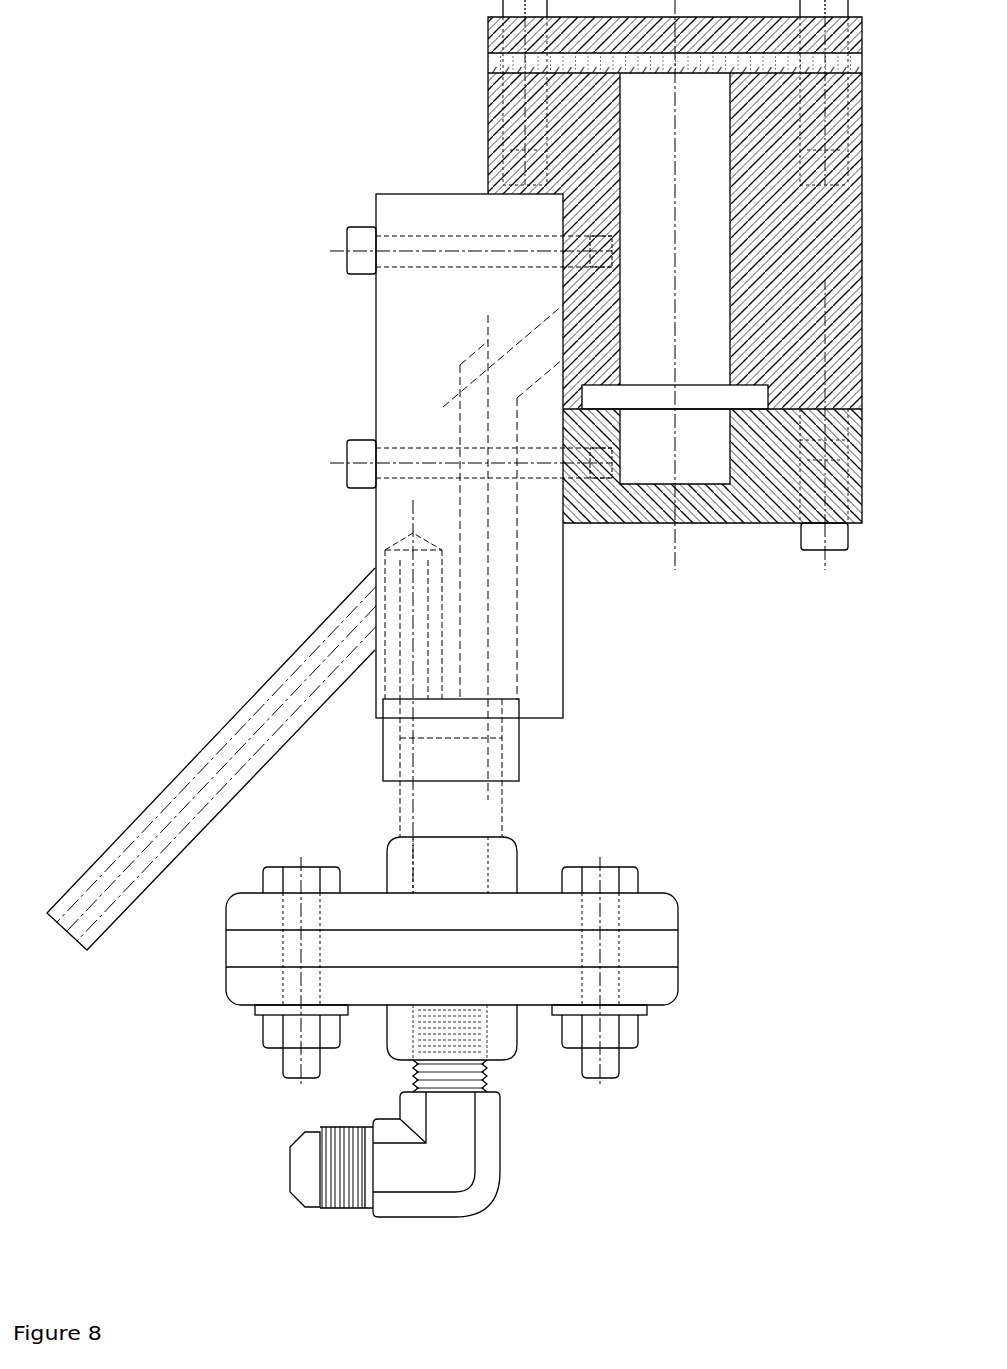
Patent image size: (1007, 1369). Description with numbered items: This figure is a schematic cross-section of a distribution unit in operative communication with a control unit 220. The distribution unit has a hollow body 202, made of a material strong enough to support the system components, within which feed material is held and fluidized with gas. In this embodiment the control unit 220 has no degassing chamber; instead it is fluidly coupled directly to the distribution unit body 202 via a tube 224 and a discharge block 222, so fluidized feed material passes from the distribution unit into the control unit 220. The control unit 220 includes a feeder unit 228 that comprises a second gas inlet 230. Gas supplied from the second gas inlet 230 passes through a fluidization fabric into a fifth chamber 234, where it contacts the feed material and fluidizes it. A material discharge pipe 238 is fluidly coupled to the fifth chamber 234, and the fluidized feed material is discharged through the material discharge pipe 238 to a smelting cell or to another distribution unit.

The body 202 is at (397, 116).
The control unit 220 is at (191, 380).
The discharge block 222 is at (361, 409).
The tube 224 is at (511, 314).
The feeder unit 228 is at (568, 663).
The fifth chamber 234 is at (488, 771).
The second gas inlet 230 is at (530, 1132).
The material discharge pipe 238 is at (224, 735).